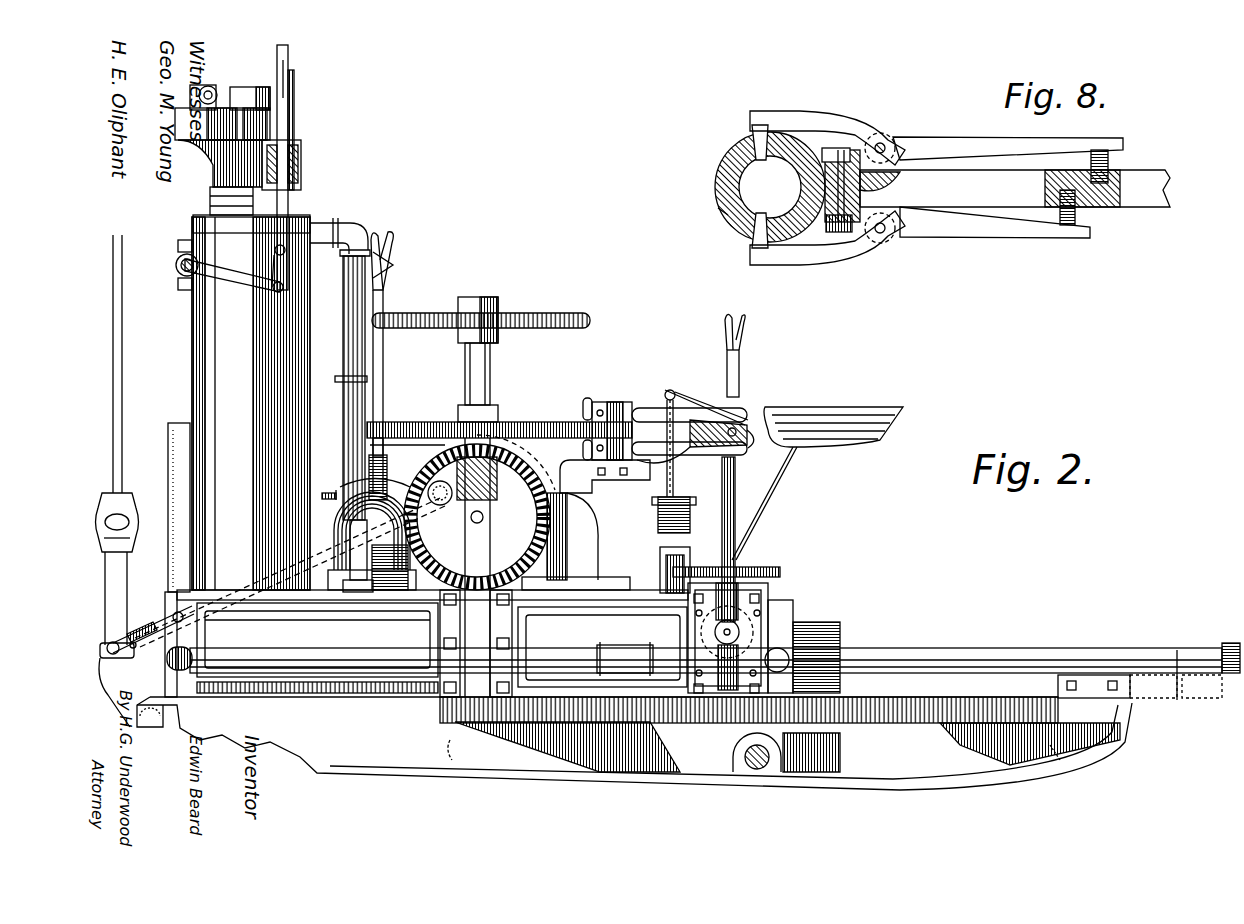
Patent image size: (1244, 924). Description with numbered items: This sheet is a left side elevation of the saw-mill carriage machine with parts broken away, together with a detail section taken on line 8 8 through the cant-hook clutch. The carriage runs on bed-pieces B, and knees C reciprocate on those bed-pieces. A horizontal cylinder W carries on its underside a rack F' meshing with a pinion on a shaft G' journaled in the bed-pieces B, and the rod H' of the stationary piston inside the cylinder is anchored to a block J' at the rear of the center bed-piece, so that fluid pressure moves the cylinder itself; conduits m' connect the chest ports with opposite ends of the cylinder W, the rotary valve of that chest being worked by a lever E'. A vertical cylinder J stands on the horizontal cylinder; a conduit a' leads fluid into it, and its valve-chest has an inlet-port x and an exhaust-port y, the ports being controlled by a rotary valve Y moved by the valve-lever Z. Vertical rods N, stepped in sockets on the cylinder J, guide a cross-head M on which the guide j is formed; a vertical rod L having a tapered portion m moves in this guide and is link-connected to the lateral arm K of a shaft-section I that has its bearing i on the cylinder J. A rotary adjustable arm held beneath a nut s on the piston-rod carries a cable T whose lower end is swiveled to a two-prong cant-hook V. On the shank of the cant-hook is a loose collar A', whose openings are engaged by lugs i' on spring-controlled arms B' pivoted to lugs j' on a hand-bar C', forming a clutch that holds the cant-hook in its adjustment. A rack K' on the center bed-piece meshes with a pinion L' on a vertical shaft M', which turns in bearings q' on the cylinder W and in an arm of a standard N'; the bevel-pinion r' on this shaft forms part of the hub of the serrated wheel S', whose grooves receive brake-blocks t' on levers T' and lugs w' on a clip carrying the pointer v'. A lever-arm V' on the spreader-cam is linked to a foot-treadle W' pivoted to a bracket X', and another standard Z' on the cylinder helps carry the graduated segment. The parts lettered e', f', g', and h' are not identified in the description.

In FIG. 2, the cable T is at (122, 440).
In FIG. 2, the section line 8 8 is at (98, 650).
In FIG. 2, the loose collar A' is at (140, 628).
In FIG. 8, the loose collar A' is at (707, 221).
In FIG. 2, the spring-controlled arms B' is at (142, 620).
In FIG. 8, the spring-controlled arms B' is at (827, 188).
In FIG. 2, the lugs j' is at (156, 639).
In FIG. 8, the lugs j' is at (884, 185).
In FIG. 2, the vertical cylinder J is at (251, 402).
In FIG. 2, the knees C is at (167, 507).
In FIG. 2, the vertical rod L is at (301, 167).
In FIG. 2, the vertical rods N is at (308, 130).
In FIG. 2, the tapered portion m is at (304, 85).
In FIG. 2, the guide j is at (291, 165).
In FIG. 2, the nut s is at (250, 98).
In FIG. 2, the cross-head M is at (222, 161).
In FIG. 2, the two-prong cant-hook V is at (203, 88).
In FIG. 8, the two-prong cant-hook V is at (770, 187).
In FIG. 2, the shaft-section I is at (180, 275).
In FIG. 2, the lateral arm K is at (235, 276).
In FIG. 2, the bearing i is at (185, 280).
In FIG. 2, the conduit a' is at (341, 405).
In FIG. 2, the valve-lever Z is at (385, 366).
In FIG. 2, the rotary valve Y is at (555, 313).
In FIG. 2, the serrated wheel S' is at (499, 414).
In FIG. 2, the vertical shaft M' is at (477, 514).
In FIG. 2, the bevel-pinion r' is at (516, 445).
In FIG. 2, the pin g' is at (440, 492).
In FIG. 2, the inlet-port x is at (372, 541).
In FIG. 8, the hand-bar C' is at (1015, 187).
In FIG. 2, the nut e' is at (324, 489).
In FIG. 2, the pin f' is at (334, 487).
In FIG. 2, the standard N' is at (586, 525).
In FIG. 2, the levers T' is at (689, 431).
In FIG. 2, the brake-blocks t' is at (574, 430).
In FIG. 2, the lever-arm V' is at (706, 434).
In FIG. 2, the lugs w' is at (692, 446).
In FIG. 2, the pointer v' is at (753, 451).
In FIG. 2, the foot-treadle W' is at (681, 515).
In FIG. 2, the bracket X' is at (707, 568).
In FIG. 2, the lever E' is at (812, 514).
In FIG. 2, the horizontal cylinder W is at (317, 648).
In FIG. 2, the standard Z' is at (317, 618).
In FIG. 2, the bearings q' is at (476, 643).
In FIG. 2, the conduits m' is at (654, 648).
In FIG. 2, the piston-rod H' is at (703, 646).
In FIG. 2, the gear box h' is at (764, 663).
In FIG. 2, the rack K' is at (780, 734).
In FIG. 2, the block J' is at (1140, 685).
In FIG. 2, the bed-pieces B is at (615, 724).
In FIG. 2, the pinion L' is at (454, 745).
In FIG. 2, the shaft G' is at (786, 750).
In FIG. 2, the rack F' is at (1050, 749).
In FIG. 8, the exhaust-port y is at (766, 145).
In FIG. 8, the lugs i' is at (761, 230).